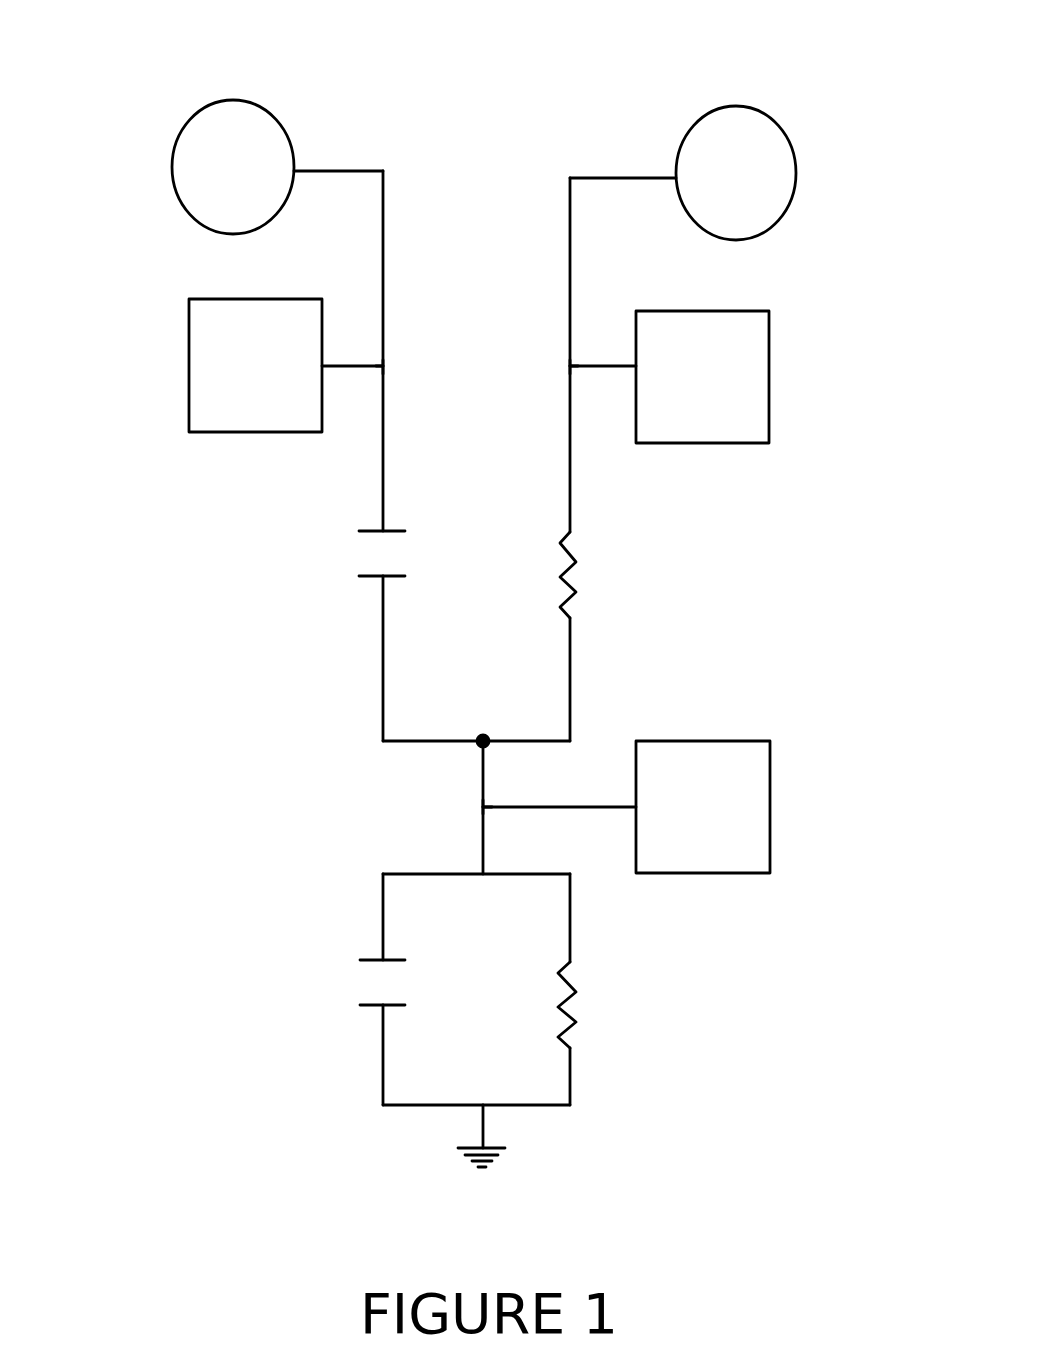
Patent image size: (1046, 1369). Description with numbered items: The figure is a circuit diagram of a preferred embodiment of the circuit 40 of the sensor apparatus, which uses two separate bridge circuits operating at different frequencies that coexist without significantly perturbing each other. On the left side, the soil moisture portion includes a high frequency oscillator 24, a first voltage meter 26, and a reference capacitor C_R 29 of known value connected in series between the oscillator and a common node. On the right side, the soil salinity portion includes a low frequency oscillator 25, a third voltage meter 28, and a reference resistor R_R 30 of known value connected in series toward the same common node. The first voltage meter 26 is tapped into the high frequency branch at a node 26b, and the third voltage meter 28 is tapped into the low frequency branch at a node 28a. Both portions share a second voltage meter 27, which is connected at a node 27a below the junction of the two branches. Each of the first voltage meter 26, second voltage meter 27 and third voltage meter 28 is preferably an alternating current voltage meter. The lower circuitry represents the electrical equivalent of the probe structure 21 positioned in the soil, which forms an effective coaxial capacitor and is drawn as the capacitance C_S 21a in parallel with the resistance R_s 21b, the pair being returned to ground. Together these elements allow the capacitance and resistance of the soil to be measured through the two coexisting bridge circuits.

The circuit 40 is at (615, 100).
The high frequency oscillator 24 is at (173, 187).
The low frequency oscillator 25 is at (797, 182).
The first voltage meter 26 is at (189, 365).
The first detector node 26b is at (383, 370).
The third voltage meter 28 is at (769, 366).
The second detector node 28a is at (570, 365).
The reference capacitor 29 is at (372, 553).
The reference resistor 30 is at (592, 568).
The second voltage meter 27 is at (770, 807).
The sensor output node 27a is at (483, 807).
The probe structure 21 is at (262, 873).
The capacitance C_S 21a is at (378, 982).
The resistance R_s 21b is at (612, 1020).